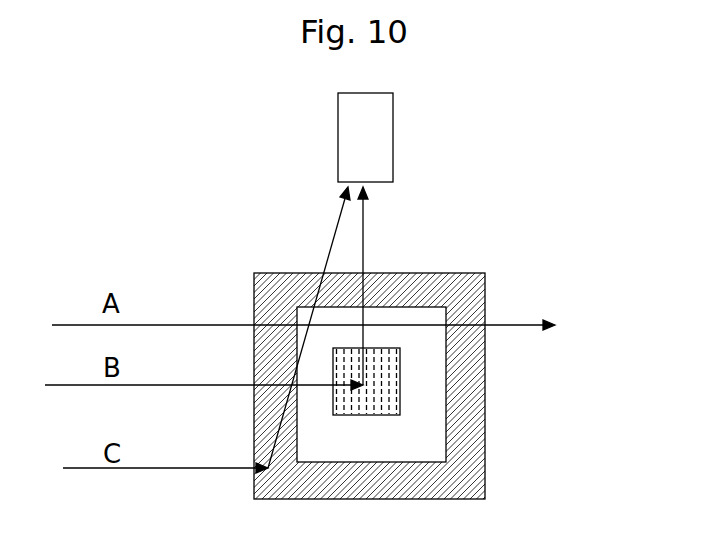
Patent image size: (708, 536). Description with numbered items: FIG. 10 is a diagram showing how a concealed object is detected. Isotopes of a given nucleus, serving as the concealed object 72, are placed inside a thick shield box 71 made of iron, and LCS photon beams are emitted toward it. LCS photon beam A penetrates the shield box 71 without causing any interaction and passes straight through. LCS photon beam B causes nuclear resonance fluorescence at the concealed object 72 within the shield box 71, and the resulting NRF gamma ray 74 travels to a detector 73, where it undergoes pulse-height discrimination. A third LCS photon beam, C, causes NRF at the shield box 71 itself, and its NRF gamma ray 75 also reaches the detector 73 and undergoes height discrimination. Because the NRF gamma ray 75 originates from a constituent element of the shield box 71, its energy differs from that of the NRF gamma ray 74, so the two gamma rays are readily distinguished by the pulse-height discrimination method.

The shield box 71 is at (473, 407).
The concealed object 72 is at (378, 410).
The detector 73 is at (382, 132).
The NRF gamma ray 74 is at (363, 223).
The NRF gamma ray 75 is at (338, 230).